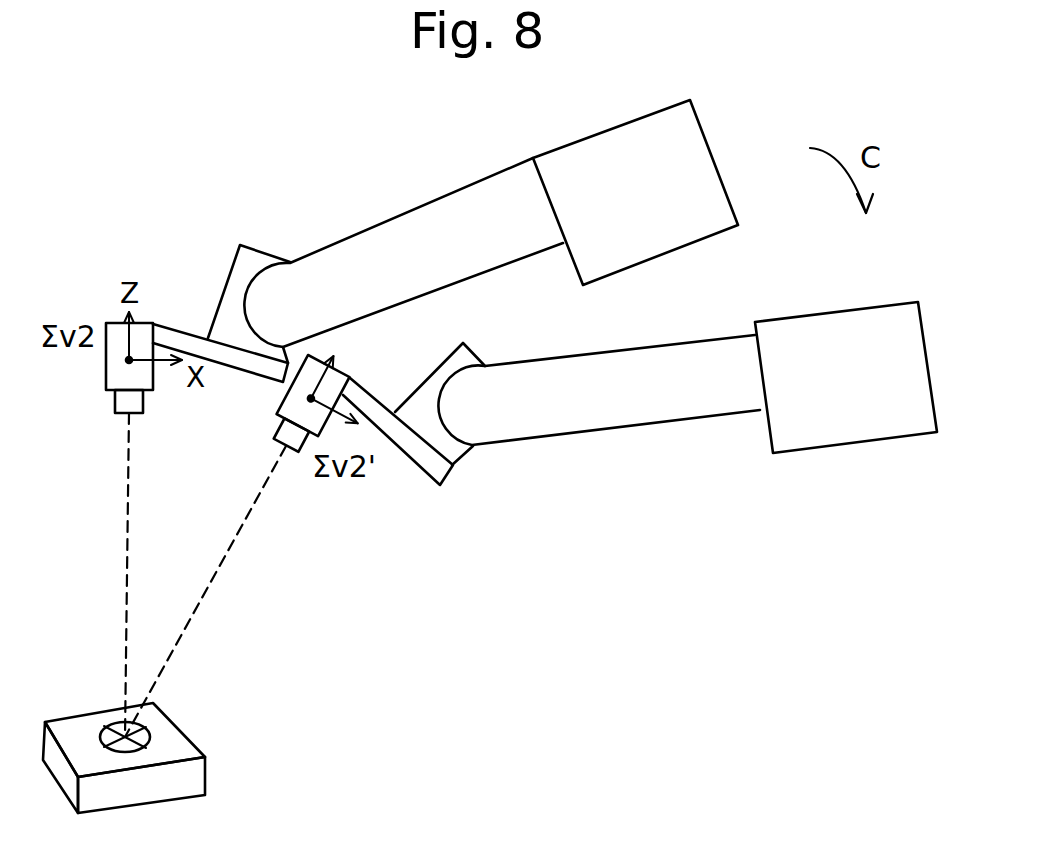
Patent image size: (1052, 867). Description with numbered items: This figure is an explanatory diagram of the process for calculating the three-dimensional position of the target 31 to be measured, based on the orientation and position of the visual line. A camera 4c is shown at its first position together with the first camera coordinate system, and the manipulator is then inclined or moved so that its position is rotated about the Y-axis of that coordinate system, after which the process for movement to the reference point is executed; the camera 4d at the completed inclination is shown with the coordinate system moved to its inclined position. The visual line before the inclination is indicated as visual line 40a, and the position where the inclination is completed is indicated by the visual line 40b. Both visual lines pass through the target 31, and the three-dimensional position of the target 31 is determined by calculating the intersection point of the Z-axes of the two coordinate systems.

The camera (first position) 4c is at (106, 377).
The camera (second position) 4d is at (283, 407).
The visual line before the inclination 40a is at (127, 567).
The visual line after inclination 40b is at (237, 535).
The target 31 is at (150, 730).